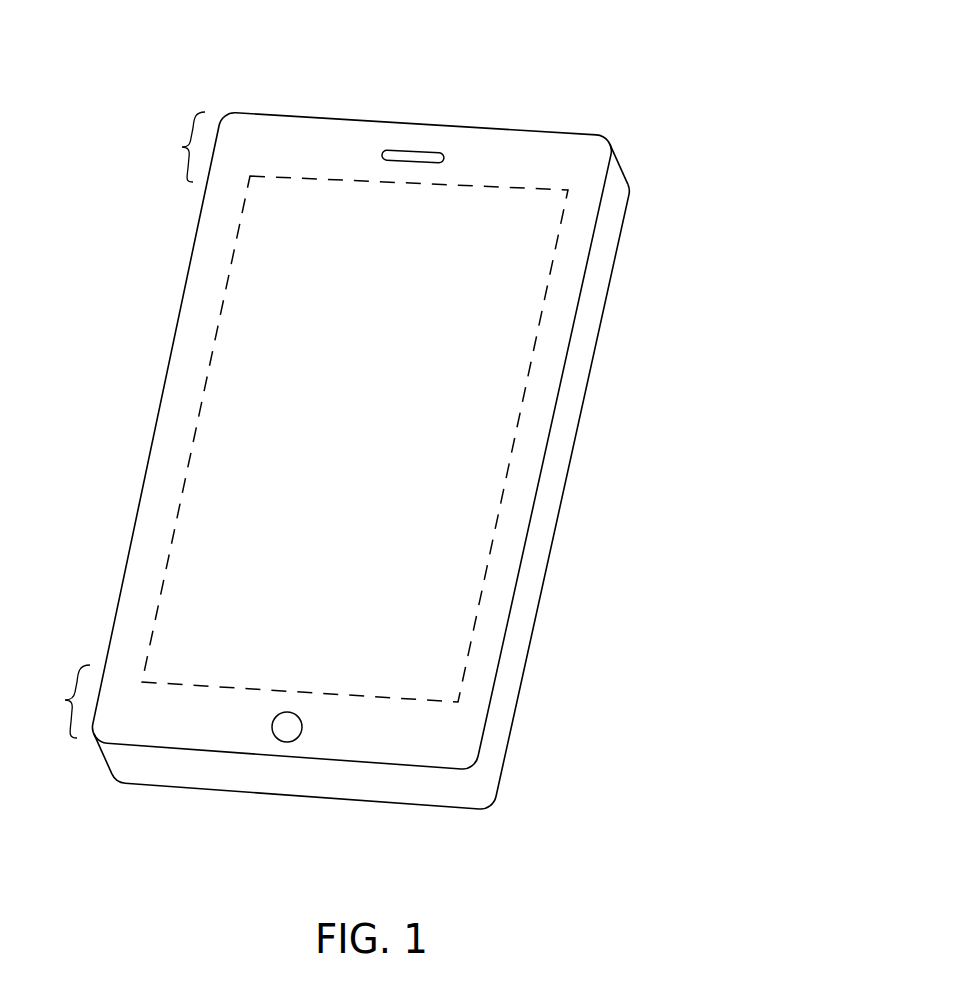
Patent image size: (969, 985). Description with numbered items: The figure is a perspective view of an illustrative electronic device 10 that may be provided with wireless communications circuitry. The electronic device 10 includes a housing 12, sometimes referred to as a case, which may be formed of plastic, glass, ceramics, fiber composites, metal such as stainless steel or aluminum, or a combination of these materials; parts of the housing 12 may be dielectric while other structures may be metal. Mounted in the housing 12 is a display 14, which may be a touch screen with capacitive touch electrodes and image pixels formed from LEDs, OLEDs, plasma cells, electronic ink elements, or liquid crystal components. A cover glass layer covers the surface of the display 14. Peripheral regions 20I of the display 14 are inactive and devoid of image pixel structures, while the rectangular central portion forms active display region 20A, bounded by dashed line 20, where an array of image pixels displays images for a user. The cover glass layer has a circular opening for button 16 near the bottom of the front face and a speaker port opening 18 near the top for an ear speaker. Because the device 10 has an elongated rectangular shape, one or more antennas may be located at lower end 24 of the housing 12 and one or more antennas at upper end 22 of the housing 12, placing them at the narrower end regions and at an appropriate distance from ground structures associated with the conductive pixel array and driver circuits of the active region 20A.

The electronic device 10 is at (640, 78).
The housing 12 is at (612, 275).
The display 14 is at (500, 422).
The button 16 is at (287, 742).
The speaker port opening 18 is at (407, 150).
The dashed line 20 is at (193, 442).
The active display region 20A is at (203, 540).
The peripheral regions 20I is at (492, 155).
The upper end 22 is at (177, 147).
The lower end 24 is at (59, 701).